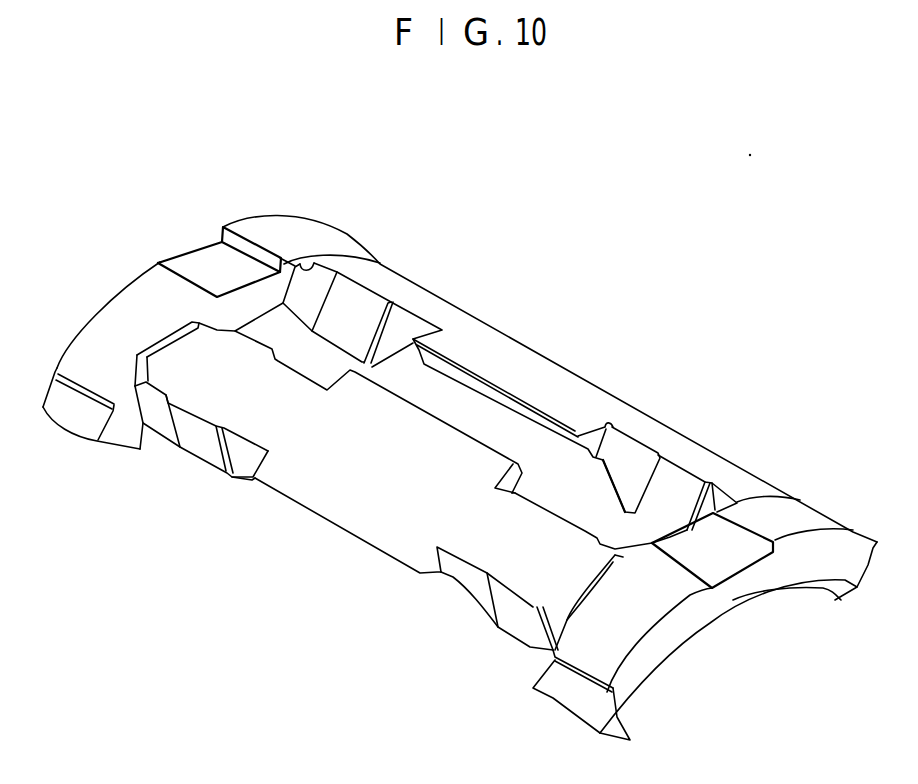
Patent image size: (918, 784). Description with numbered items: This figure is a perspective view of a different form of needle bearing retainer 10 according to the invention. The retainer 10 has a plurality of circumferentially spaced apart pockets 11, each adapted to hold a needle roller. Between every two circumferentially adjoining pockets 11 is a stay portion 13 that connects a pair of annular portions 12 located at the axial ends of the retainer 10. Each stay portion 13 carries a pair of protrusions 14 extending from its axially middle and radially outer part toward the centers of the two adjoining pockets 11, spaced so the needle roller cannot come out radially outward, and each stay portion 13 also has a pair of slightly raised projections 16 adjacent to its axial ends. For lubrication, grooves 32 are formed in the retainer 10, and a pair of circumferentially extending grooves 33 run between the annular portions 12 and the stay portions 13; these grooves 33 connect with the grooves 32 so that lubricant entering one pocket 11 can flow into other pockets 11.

The retainer 10 is at (515, 276).
The pocket 11 is at (570, 487).
The annular portion 12 is at (148, 293).
The stay portion 13 is at (660, 437).
The protrusion 14 is at (453, 437).
The raised projection 16 is at (358, 307).
The groove 32 is at (212, 263).
The circumferentially extending groove 33 is at (163, 353).